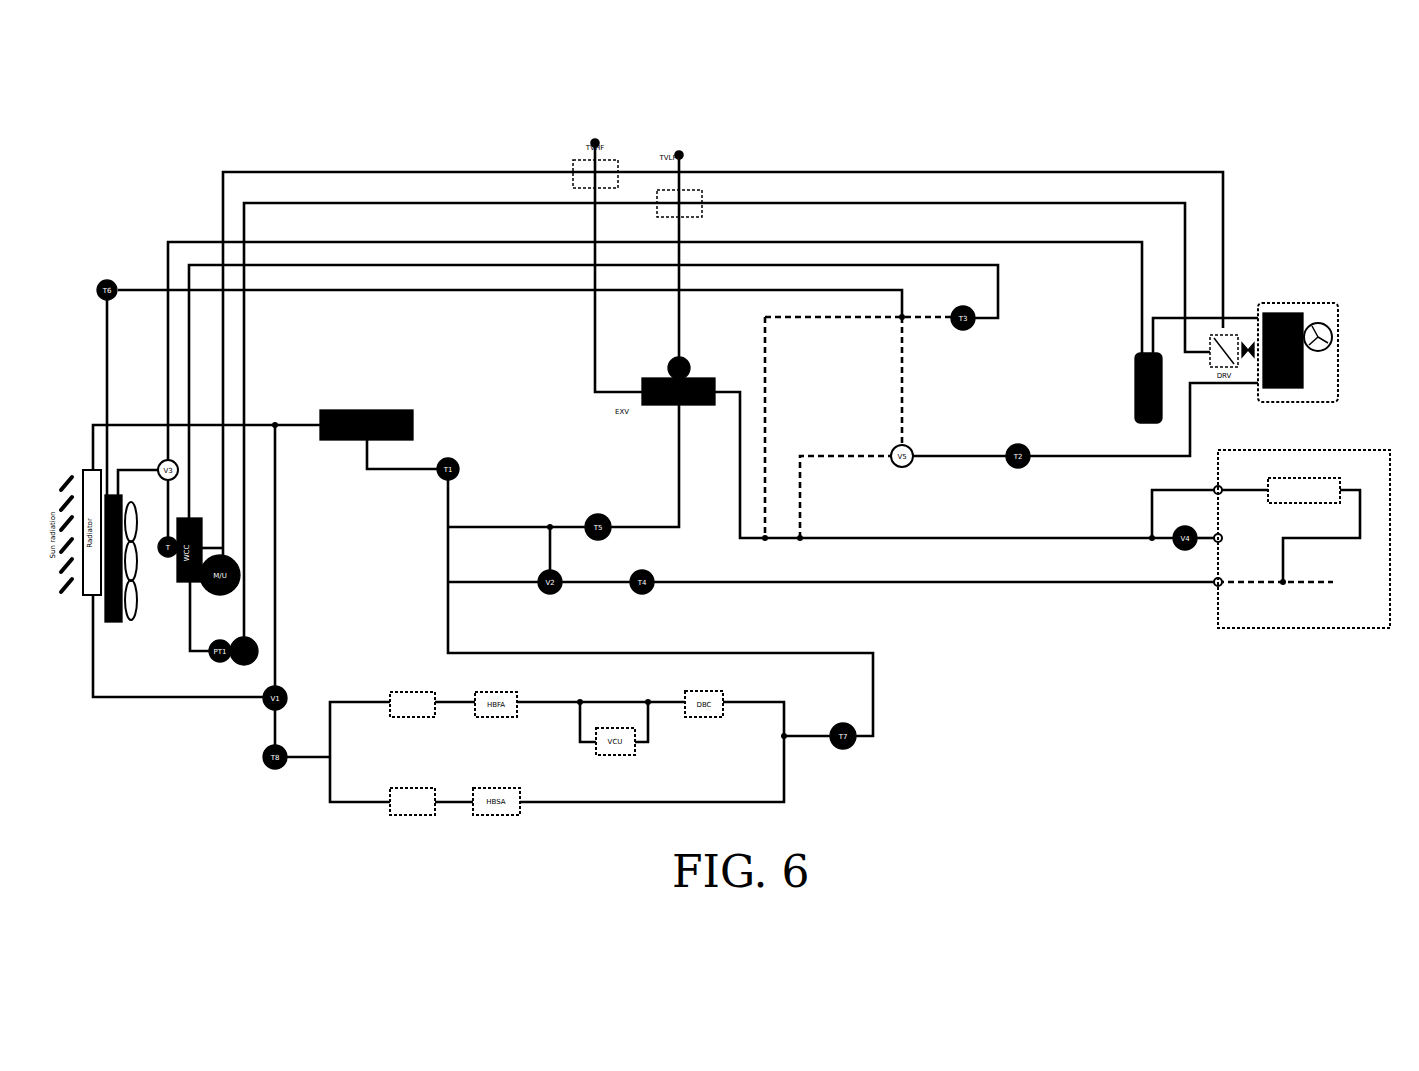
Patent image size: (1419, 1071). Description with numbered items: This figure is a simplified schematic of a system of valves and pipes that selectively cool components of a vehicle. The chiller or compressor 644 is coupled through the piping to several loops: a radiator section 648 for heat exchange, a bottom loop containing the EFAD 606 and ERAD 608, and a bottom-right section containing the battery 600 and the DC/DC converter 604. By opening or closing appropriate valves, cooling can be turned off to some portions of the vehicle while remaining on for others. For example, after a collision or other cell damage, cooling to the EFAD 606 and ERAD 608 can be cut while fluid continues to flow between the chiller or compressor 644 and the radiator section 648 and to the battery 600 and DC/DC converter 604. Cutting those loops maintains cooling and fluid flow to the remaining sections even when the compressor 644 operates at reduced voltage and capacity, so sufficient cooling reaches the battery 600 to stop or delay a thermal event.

The battery 600 is at (1255, 625).
The DC/DC converter 604 is at (1348, 478).
The EFAD 606 is at (393, 692).
The ERAD 608 is at (393, 815).
The chiller or compressor 644 is at (637, 403).
The radiator section 648 is at (260, 410).